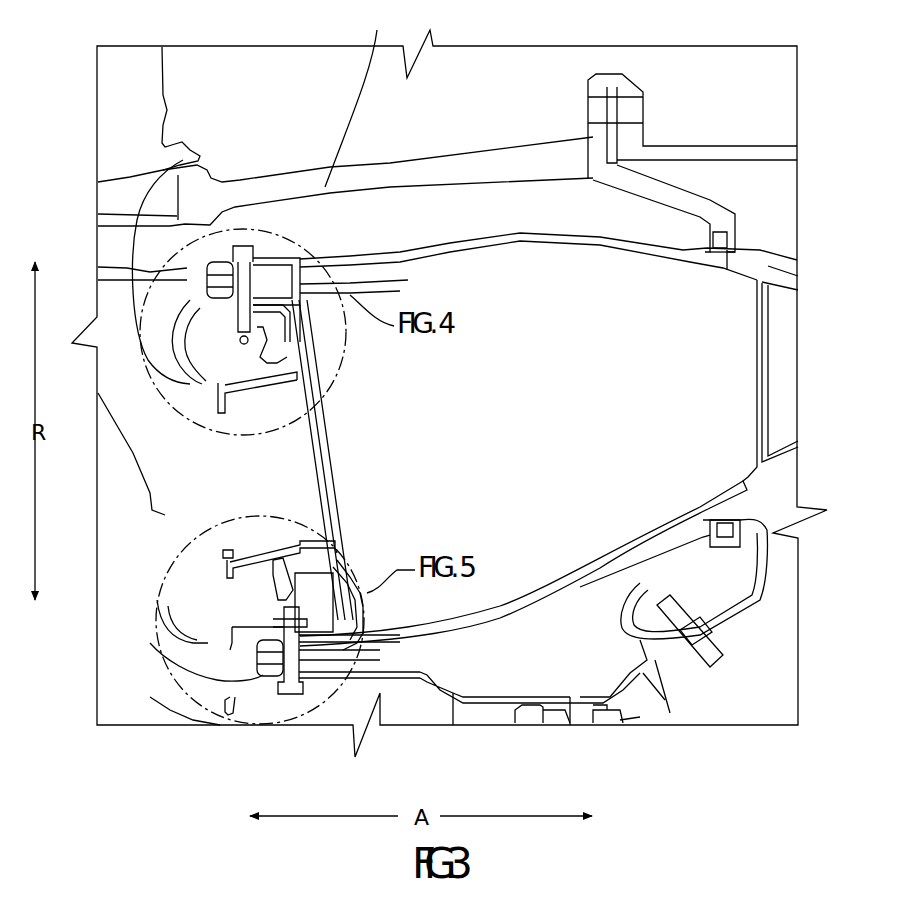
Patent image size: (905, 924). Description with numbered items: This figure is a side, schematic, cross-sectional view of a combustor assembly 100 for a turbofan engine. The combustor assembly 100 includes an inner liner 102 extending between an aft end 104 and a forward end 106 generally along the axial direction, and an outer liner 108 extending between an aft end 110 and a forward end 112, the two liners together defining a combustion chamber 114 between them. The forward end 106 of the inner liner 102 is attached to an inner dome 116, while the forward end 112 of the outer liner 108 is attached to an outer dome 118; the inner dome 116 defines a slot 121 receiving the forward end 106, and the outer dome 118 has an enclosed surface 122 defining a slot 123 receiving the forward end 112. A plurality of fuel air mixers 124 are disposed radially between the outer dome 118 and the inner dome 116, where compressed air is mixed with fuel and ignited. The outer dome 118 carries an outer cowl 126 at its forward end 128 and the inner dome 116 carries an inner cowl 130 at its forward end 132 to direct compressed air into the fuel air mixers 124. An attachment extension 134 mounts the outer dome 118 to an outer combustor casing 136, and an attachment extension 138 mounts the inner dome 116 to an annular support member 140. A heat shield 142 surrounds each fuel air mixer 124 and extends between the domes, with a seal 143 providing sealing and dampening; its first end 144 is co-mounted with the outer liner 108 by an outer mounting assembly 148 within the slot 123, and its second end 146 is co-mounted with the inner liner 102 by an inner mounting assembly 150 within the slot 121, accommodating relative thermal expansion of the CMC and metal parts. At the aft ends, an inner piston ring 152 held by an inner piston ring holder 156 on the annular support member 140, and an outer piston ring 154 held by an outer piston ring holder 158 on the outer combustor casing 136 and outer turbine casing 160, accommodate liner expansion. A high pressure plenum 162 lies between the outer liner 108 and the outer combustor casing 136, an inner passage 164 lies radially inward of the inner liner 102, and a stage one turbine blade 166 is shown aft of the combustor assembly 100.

The combustor assembly 100 is at (517, 193).
The inner liner 102 is at (532, 592).
The aft end 104 is at (716, 500).
The forward end 106 is at (265, 680).
The outer liner 108 is at (470, 243).
The aft end 110 is at (718, 296).
The forward end 112 is at (219, 249).
The combustion chamber 114 is at (562, 400).
The inner dome 116 is at (227, 667).
The outer dome 118 is at (150, 323).
The slot 121 is at (353, 650).
The enclosed surface 122 is at (243, 288).
The slot 123 is at (270, 261).
The fuel air mixer 124 is at (187, 490).
The outer cowl 126 is at (187, 373).
The forward end 128 is at (135, 305).
The inner cowl 130 is at (190, 648).
The forward end 132 is at (150, 700).
The attachment extension 134 is at (98, 247).
The outer combustor casing 136 is at (230, 650).
The attachment extension 138 is at (455, 697).
The annular support member 140 is at (648, 683).
The heat shield 142 is at (385, 288).
The seal 143 is at (323, 361).
The first end 144 is at (315, 291).
The second end 146 is at (360, 640).
The outer mounting assembly 148 is at (270, 245).
The inner mounting assembly 150 is at (297, 700).
The inner piston ring 152 is at (748, 617).
The outer piston ring 154 is at (698, 248).
The inner piston ring holder 156 is at (640, 583).
The outer piston ring holder 158 is at (678, 207).
The outer turbine casing 160 is at (660, 160).
The high pressure plenum 162 is at (571, 220).
The inner passage 164 is at (541, 675).
The stage 1 turbine blade 166 is at (782, 356).